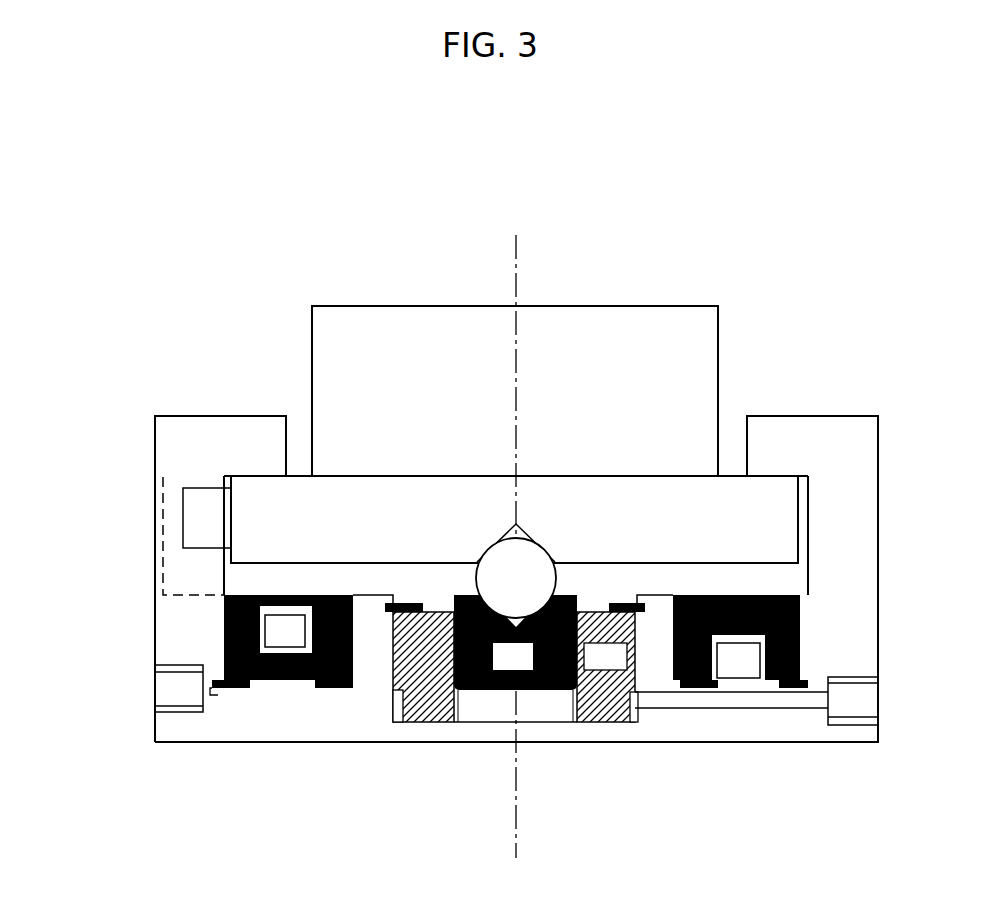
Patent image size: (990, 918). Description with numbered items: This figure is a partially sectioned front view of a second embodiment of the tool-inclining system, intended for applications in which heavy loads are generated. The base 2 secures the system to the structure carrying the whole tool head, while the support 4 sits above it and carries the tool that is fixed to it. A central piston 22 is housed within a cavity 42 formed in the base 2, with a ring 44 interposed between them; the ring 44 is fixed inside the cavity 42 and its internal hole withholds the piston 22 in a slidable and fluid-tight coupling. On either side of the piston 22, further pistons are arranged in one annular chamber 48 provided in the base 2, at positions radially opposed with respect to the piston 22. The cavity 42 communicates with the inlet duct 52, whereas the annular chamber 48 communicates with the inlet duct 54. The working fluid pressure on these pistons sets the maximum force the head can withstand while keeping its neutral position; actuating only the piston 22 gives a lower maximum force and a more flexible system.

The base 2 is at (878, 472).
The support 4 is at (718, 347).
The piston 22 is at (548, 690).
The cavity 42 is at (507, 722).
The ring 44 is at (417, 722).
The annular chamber 48 is at (703, 688).
The inlet duct 52 is at (863, 718).
The inlet duct 54 is at (173, 710).